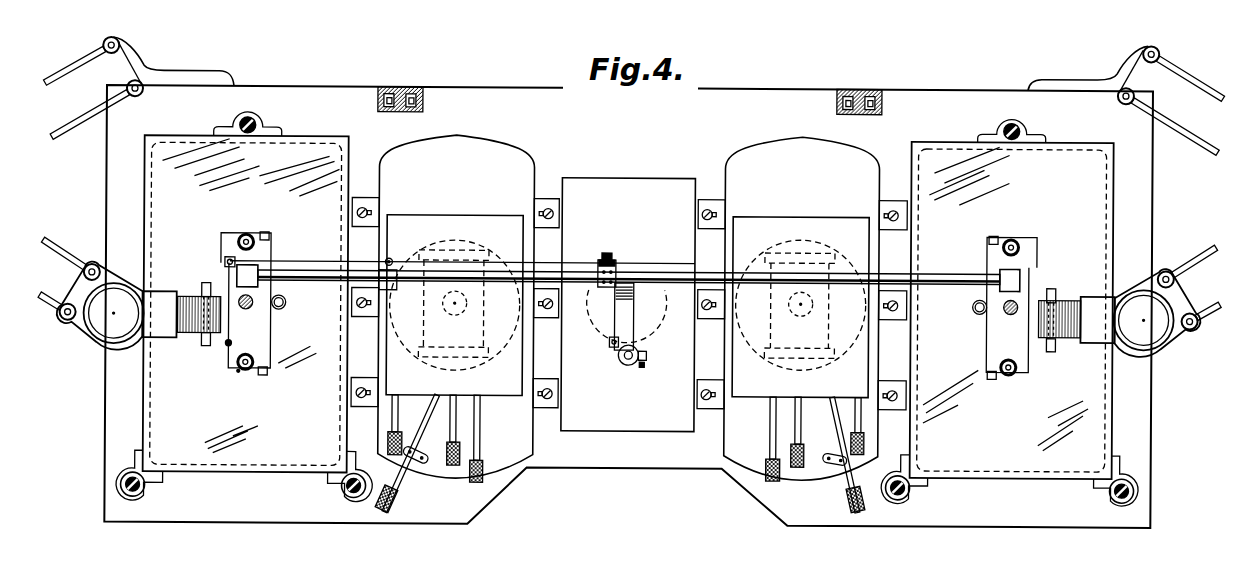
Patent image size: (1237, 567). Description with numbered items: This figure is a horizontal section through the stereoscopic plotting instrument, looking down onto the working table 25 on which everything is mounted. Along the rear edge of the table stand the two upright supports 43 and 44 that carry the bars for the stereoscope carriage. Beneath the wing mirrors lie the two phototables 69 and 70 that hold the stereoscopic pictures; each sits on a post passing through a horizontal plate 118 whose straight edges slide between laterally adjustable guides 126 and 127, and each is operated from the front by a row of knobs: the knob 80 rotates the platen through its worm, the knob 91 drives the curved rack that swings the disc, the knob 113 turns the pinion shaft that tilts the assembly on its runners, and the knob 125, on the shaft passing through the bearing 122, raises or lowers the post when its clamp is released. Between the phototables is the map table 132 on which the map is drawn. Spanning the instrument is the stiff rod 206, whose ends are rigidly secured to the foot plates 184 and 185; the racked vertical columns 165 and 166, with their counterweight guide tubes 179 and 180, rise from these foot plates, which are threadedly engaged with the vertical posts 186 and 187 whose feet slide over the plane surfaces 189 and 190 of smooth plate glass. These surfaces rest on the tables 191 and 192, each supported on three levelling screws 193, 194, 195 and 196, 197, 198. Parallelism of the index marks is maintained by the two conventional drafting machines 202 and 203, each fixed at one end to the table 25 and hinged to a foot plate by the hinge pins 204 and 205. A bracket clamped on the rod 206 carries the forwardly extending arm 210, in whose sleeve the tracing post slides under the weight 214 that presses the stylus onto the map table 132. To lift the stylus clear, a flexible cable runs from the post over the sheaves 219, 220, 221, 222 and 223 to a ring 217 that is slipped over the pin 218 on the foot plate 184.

The working table 25 is at (293, 95).
The upright support 43 is at (424, 99).
The upright support 44 is at (882, 101).
The phototable 69 is at (458, 221).
The phototable 70 is at (805, 225).
The knob 80 is at (388, 440).
The knob 91 is at (453, 466).
The knob 113 is at (484, 480).
The horizontal plate 118 is at (495, 148).
The bearing 122 is at (420, 462).
The knob 125 is at (390, 515).
The guide 126 is at (374, 205).
The guide 127 is at (539, 205).
The map table 132 is at (625, 175).
The racked vertical column 165 is at (253, 306).
The racked vertical column 166 is at (1007, 310).
The vertical guide tube 179 is at (288, 305).
The vertical guide tube 180 is at (974, 307).
The foot plate 184 is at (233, 232).
The foot plate 185 is at (1023, 237).
The vertical post 186 is at (255, 237).
The vertical post 187 is at (1021, 248).
The plane surface 189 is at (180, 152).
The plane surface 190 is at (1080, 147).
The table 191 is at (252, 474).
The table 192 is at (1012, 477).
The levelling screw 193 is at (145, 488).
The levelling screw 194 is at (345, 485).
The levelling screw 195 is at (248, 116).
The levelling screw 196 is at (908, 493).
The levelling screw 197 is at (1110, 489).
The levelling screw 198 is at (1012, 122).
The drafting machine 202 is at (183, 78).
The drafting machine 203 is at (1068, 80).
The hinge pin 204 is at (213, 341).
The hinge pin 205 is at (1053, 341).
The stiff rod 206 is at (308, 267).
The forwardly extending arm 210 is at (634, 318).
The weight 214 is at (633, 362).
The ring 217 is at (232, 341).
The pin 218 is at (240, 371).
The sheave 219 is at (609, 343).
The sheave 220 is at (619, 263).
The sheave 221 is at (608, 250).
The sheave 222 is at (391, 256).
The sheave 223 is at (228, 260).